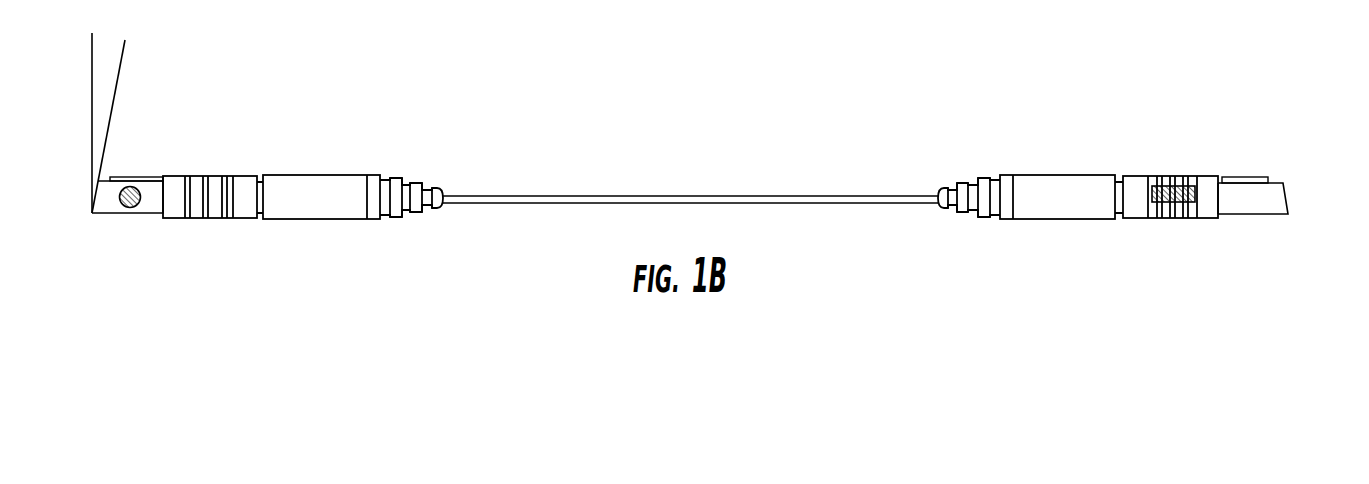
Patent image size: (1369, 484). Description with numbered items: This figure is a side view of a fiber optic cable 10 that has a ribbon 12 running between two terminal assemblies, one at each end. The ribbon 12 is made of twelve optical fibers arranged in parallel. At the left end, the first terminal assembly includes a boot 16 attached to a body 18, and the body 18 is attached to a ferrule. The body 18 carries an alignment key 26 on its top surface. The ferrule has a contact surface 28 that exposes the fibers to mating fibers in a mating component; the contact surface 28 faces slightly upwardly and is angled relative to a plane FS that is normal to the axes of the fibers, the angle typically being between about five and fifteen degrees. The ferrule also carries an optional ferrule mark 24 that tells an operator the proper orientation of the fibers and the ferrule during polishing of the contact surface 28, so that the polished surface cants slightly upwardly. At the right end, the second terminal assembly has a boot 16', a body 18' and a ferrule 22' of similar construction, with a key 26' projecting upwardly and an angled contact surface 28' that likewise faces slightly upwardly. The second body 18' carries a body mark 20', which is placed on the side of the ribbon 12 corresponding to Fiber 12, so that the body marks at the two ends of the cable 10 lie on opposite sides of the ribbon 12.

The fiber optic cable 10 is at (923, 161).
The ribbon 12 is at (833, 204).
The boot 16 is at (322, 167).
The body 18 is at (221, 170).
The ferrule mark 24 is at (137, 206).
The alignment key 26 is at (145, 149).
The contact surface 28 is at (106, 178).
The boot 16' is at (1057, 166).
The body 18' is at (1170, 171).
The body mark 20' is at (1165, 230).
The ferrule 22' is at (1197, 149).
The key 26' is at (1239, 144).
The angled contact surface 28' is at (1280, 163).
The plane FS is at (91, 86).